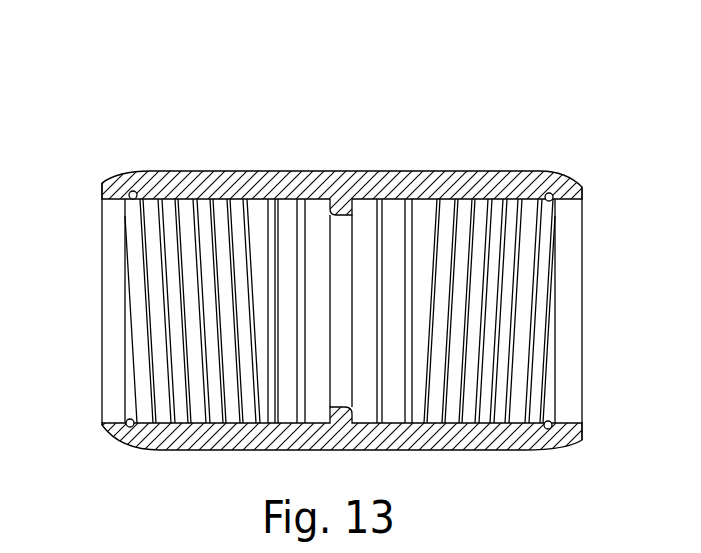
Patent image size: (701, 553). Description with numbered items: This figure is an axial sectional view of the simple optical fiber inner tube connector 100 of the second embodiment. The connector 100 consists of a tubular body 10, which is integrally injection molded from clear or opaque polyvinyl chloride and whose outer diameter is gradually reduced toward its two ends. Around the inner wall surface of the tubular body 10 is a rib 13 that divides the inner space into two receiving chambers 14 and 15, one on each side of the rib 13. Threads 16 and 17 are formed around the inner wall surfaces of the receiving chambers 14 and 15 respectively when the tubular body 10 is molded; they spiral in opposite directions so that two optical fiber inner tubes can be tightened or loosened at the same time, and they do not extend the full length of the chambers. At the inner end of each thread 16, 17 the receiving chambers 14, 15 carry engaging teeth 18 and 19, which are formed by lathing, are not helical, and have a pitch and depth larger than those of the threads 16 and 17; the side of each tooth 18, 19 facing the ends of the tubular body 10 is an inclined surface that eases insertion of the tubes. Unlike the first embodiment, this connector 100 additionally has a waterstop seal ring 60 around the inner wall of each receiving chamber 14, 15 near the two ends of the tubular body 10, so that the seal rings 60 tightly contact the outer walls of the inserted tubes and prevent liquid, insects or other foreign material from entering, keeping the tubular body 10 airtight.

The optical fiber inner tube connector 100 is at (342, 228).
The tubular body 10 is at (195, 170).
The rib 13 is at (340, 226).
The receiving chamber 14 is at (108, 222).
The receiving chamber 15 is at (567, 235).
The thread 16 is at (160, 170).
The thread 17 is at (524, 172).
The engaging tooth 18 is at (273, 198).
The engaging tooth 19 is at (381, 198).
The waterstop seal ring 60 is at (130, 192).